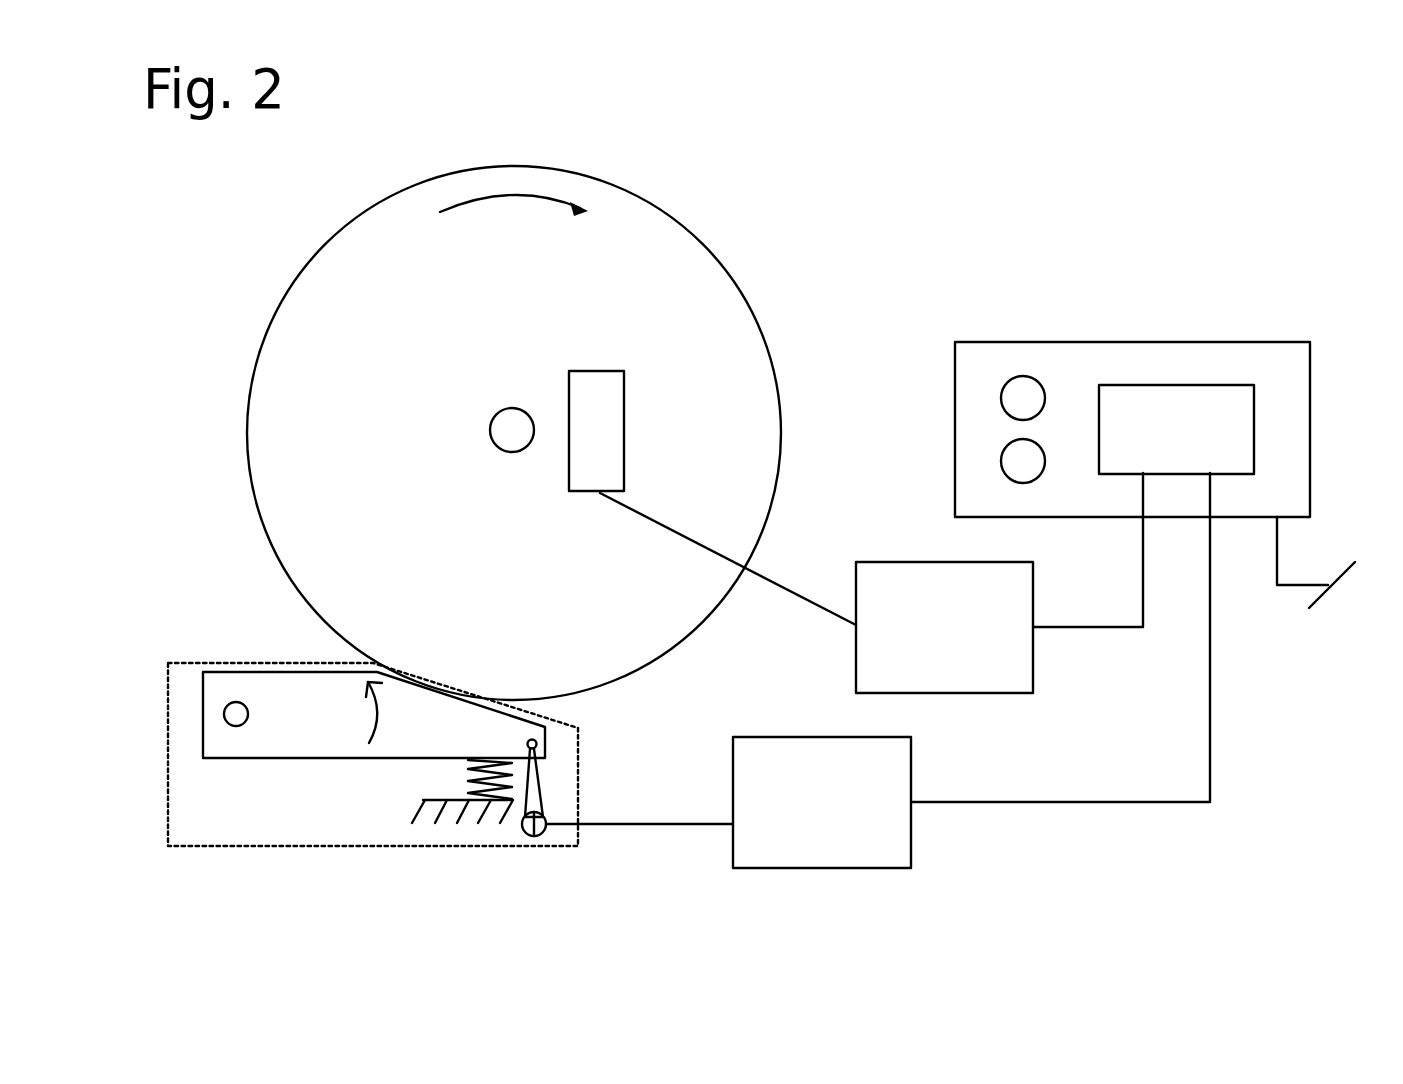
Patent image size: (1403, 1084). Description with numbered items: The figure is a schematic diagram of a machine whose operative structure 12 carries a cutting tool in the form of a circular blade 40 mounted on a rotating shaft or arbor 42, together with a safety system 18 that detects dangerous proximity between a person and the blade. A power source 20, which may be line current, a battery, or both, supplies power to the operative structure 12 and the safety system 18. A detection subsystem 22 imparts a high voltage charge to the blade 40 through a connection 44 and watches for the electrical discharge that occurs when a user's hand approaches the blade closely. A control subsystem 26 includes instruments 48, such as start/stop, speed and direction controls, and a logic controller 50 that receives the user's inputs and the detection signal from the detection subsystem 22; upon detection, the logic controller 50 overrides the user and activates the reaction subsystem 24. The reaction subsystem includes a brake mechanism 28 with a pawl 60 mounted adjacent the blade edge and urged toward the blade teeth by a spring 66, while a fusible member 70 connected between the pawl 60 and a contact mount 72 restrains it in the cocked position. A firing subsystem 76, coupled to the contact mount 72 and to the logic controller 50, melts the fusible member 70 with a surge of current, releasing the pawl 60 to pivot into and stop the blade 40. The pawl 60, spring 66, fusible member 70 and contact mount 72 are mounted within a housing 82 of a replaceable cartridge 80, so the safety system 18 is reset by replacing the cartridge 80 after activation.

The operative structure 12 is at (766, 178).
The safety system 18 is at (1120, 221).
The power source 20 is at (1320, 577).
The detection subsystem 22 is at (1007, 608).
The reaction subsystem 24 is at (866, 917).
The control subsystem 26 is at (1177, 342).
The brake mechanism 28 is at (255, 790).
The circular blade 40 is at (410, 292).
The arbor 42 is at (501, 434).
The connection 44 is at (608, 397).
The instruments 48 is at (1010, 398).
The logic controller 50 is at (1230, 433).
The pawl 60 is at (265, 683).
The spring 66 is at (442, 781).
The fusible member 70 is at (543, 799).
The contact mount 72 is at (527, 831).
The firing subsystem 76 is at (887, 783).
The replaceable cartridge 80 is at (206, 888).
The housing 82 is at (282, 847).